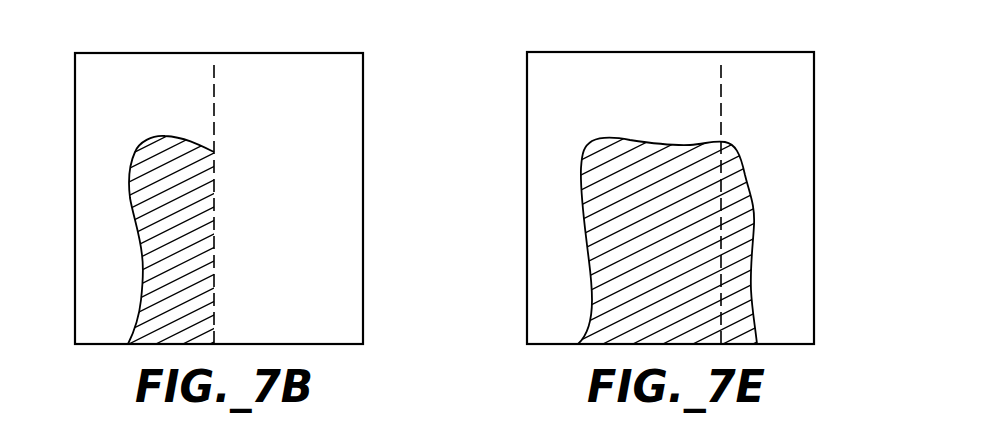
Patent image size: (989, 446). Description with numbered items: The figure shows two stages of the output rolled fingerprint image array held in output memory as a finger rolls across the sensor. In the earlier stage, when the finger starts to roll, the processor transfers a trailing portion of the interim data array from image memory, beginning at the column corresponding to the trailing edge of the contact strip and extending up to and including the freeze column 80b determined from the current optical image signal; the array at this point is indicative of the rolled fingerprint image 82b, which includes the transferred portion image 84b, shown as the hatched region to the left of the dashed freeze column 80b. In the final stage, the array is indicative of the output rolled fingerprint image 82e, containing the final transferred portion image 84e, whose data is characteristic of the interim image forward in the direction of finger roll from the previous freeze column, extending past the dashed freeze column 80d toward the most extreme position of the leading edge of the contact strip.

In FIG. 7B, the freeze column 80b is at (212, 72).
In FIG. 7B, the rolled fingerprint image 82b is at (327, 100).
In FIG. 7B, the transferred portion image 84b is at (140, 255).
In FIG. 7E, the freeze column 80d is at (719, 71).
In FIG. 7E, the output rolled fingerprint image 82e is at (788, 95).
In FIG. 7E, the transferred portion image 84e is at (757, 234).